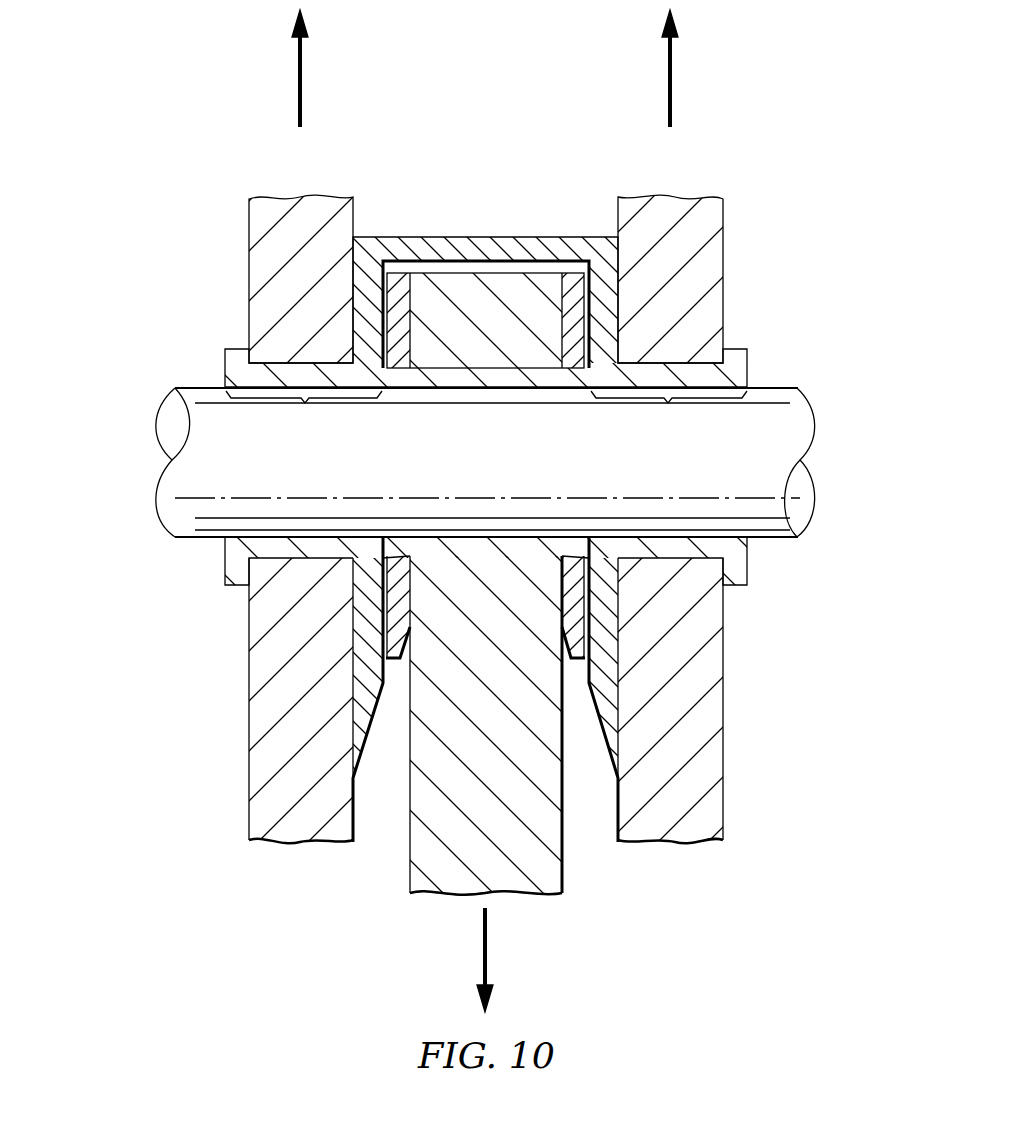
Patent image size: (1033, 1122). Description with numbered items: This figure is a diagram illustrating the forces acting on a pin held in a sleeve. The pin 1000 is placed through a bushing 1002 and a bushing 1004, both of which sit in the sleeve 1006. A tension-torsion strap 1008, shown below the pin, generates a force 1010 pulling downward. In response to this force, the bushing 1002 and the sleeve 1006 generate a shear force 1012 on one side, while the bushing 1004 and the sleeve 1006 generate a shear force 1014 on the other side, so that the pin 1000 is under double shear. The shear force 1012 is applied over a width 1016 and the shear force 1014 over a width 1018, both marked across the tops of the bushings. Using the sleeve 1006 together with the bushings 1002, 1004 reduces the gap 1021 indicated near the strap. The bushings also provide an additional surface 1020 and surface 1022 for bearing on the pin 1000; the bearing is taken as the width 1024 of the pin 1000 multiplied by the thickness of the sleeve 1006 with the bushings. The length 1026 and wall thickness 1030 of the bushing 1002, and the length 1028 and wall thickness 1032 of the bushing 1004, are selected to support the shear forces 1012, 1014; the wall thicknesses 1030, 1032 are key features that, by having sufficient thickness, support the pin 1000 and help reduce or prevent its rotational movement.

The pin 1000 is at (196, 540).
The bushing 1002 is at (232, 348).
The bushing 1004 is at (745, 348).
The sleeve 1006 is at (352, 754).
The tension-torsion strap 1008 is at (450, 900).
The force 1010 is at (490, 948).
The shear force 1012 is at (298, 85).
The shear force 1014 is at (673, 85).
The width 1016 is at (249, 167).
The width 1018 is at (723, 167).
The surface 1020 is at (304, 412).
The gap 1021 is at (630, 912).
The surface 1022 is at (669, 412).
The width 1024 is at (810, 388).
The length 1026 is at (382, 867).
The length 1028 is at (723, 850).
The wall thickness 1030 is at (127, 363).
The wall thickness 1032 is at (725, 363).